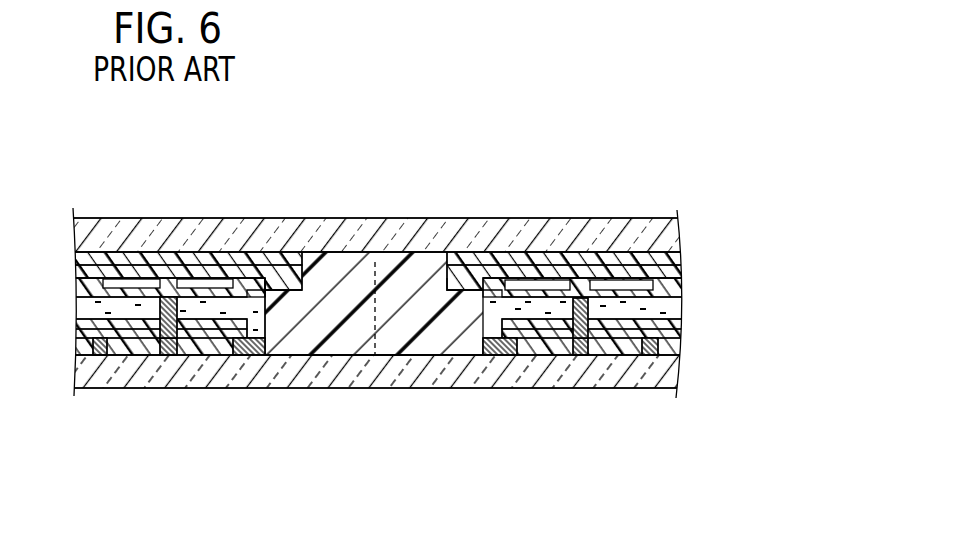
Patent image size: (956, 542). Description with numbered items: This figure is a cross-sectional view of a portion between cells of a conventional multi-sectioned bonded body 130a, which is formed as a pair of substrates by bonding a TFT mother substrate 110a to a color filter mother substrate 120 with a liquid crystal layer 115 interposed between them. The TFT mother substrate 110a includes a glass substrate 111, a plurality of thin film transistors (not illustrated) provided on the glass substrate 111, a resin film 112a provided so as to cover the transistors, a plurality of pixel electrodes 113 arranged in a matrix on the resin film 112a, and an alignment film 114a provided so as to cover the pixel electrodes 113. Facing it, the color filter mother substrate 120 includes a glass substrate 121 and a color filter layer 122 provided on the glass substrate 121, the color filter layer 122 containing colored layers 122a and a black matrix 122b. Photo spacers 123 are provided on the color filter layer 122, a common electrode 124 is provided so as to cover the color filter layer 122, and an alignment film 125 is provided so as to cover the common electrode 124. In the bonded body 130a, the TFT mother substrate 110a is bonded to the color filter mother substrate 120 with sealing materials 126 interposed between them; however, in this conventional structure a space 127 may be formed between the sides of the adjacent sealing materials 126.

The bonded body 130a is at (98, 182).
The TFT mother substrate 110a is at (788, 193).
The glass substrate 111 is at (680, 228).
The resin film 112a is at (680, 256).
The pixel electrodes 113 is at (679, 279).
The alignment film 114a is at (681, 289).
The liquid crystal layer 115 is at (685, 306).
The space 127 is at (377, 262).
The alignment film 125 is at (685, 325).
The common electrode 124 is at (685, 334).
The color filter mother substrate 120 is at (811, 328).
The glass substrate 121 is at (625, 383).
The color filter layer 122 is at (753, 380).
The colored layers 122a is at (685, 358).
The black matrix 122b is at (650, 358).
The photo spacers 123 is at (602, 338).
The sealing materials 126 is at (410, 356).